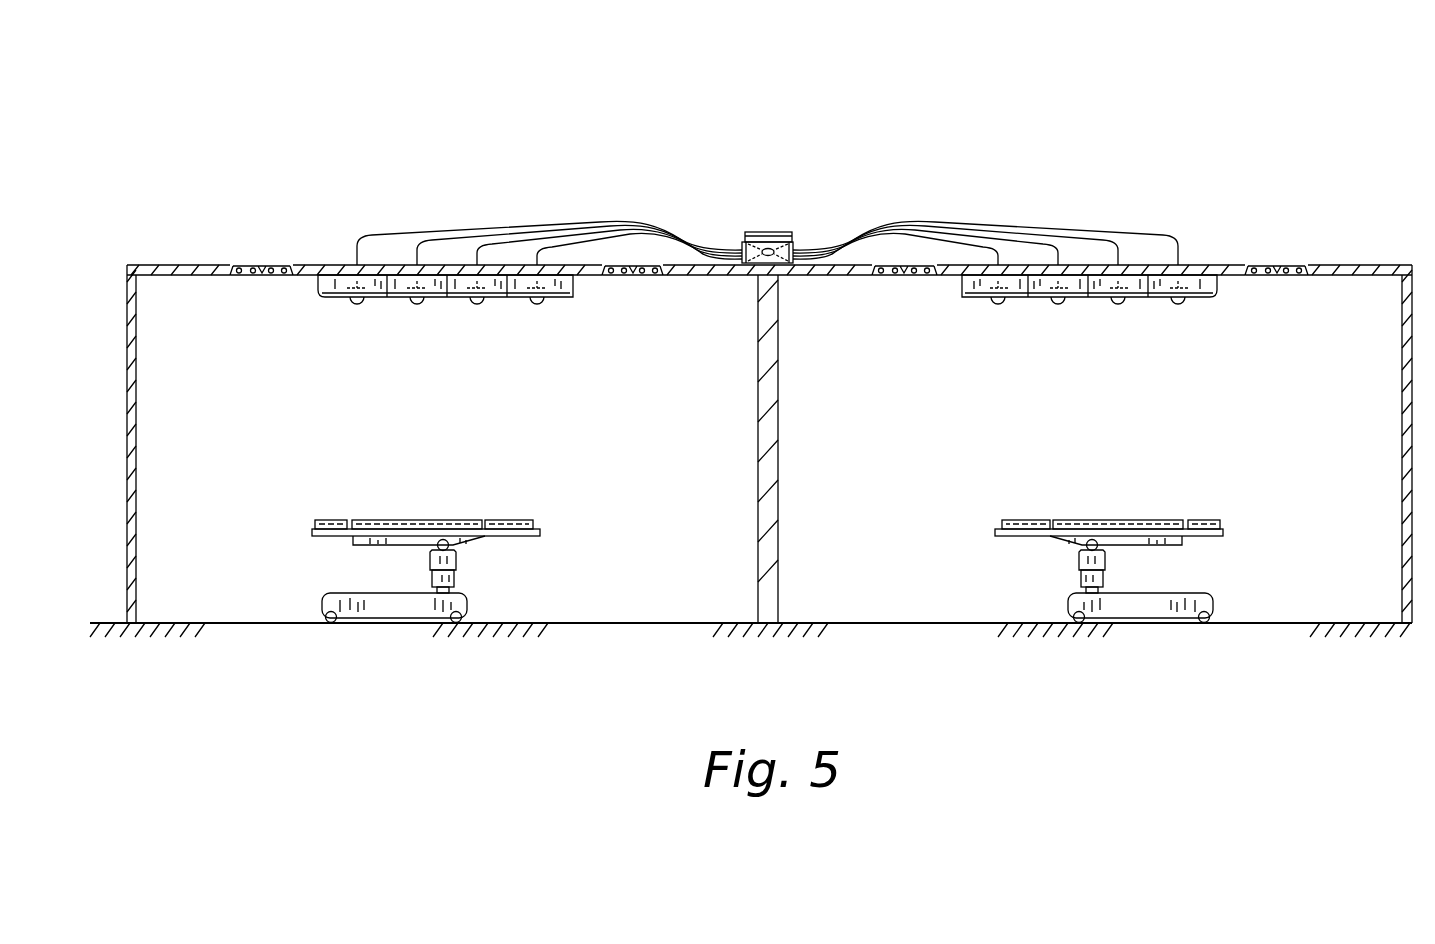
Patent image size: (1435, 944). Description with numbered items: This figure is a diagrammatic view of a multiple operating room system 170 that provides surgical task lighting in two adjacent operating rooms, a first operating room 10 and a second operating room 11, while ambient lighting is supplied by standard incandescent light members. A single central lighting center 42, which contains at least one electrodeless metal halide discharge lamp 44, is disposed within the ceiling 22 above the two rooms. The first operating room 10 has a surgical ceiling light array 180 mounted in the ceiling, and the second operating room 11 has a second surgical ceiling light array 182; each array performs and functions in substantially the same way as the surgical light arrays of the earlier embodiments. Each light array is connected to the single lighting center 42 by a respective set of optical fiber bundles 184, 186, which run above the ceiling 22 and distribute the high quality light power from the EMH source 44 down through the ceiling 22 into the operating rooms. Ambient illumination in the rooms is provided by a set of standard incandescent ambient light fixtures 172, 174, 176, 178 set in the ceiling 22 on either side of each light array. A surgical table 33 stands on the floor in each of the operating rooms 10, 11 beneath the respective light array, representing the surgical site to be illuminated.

The first operating room 10 is at (232, 485).
The second operating room 11 is at (885, 485).
The ceiling 22 is at (1340, 276).
The surgical table 33 is at (568, 512).
The lighting center 42 is at (753, 194).
The electrodeless metal halide discharge lamp 44 is at (768, 249).
The multiple operating room system 170 is at (767, 156).
The incandescent ambient light fixture 172 is at (250, 293).
The incandescent ambient light fixture 174 is at (643, 290).
The incandescent ambient light fixture 176 is at (888, 293).
The incandescent ambient light fixture 178 is at (1282, 290).
The surgical ceiling light array 180 is at (438, 298).
The second surgical ceiling light array 182 is at (1083, 298).
The optical fiber bundle 184 is at (485, 213).
The optical fiber bundle 186 is at (1004, 203).